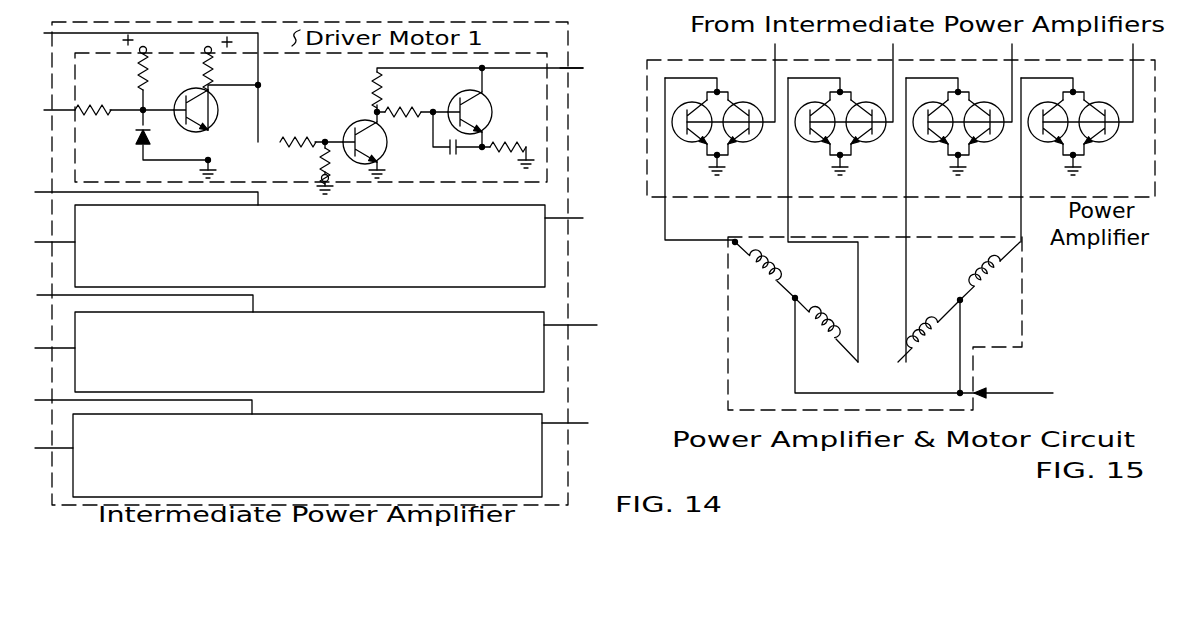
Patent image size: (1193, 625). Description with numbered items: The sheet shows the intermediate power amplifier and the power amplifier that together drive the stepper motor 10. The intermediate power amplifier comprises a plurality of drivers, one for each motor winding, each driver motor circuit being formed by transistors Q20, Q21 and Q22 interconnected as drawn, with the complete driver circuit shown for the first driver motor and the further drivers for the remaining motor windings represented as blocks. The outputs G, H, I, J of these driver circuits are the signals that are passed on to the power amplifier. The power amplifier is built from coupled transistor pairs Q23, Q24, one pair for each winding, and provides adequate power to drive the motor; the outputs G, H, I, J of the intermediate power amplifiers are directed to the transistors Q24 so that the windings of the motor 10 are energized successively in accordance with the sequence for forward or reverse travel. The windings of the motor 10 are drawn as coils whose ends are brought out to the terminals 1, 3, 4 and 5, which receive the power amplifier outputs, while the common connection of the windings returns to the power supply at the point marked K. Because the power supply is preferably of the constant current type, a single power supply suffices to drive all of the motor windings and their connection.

In FIG. 15, the motor winding terminal 1 is at (755, 266).
In FIG. 15, the motor winding terminal 3 is at (826, 339).
In FIG. 15, the motor winding terminal 4 is at (925, 344).
In FIG. 15, the motor winding terminal 5 is at (1022, 298).
In FIG. 15, the stepper motor 10 is at (909, 322).
In FIG. 14, the transistor Q20 is at (184, 90).
In FIG. 14, the transistor Q21 is at (351, 122).
In FIG. 14, the transistor Q22 is at (458, 94).
In FIG. 15, the transistor Q23 is at (680, 142).
In FIG. 15, the transistor Q24 is at (756, 141).
In FIG. 14, the intermediate power amplifier output G is at (584, 68).
In FIG. 15, the intermediate power amplifier output G is at (742, 78).
In FIG. 14, the intermediate power amplifier output H is at (341, 246).
In FIG. 15, the intermediate power amplifier output H is at (863, 78).
In FIG. 14, the intermediate power amplifier output I is at (342, 352).
In FIG. 15, the intermediate power amplifier output I is at (977, 78).
In FIG. 14, the intermediate power amplifier output J is at (337, 455).
In FIG. 15, the intermediate power amplifier output J is at (1095, 78).
In FIG. 15, the power supply input K is at (1054, 392).